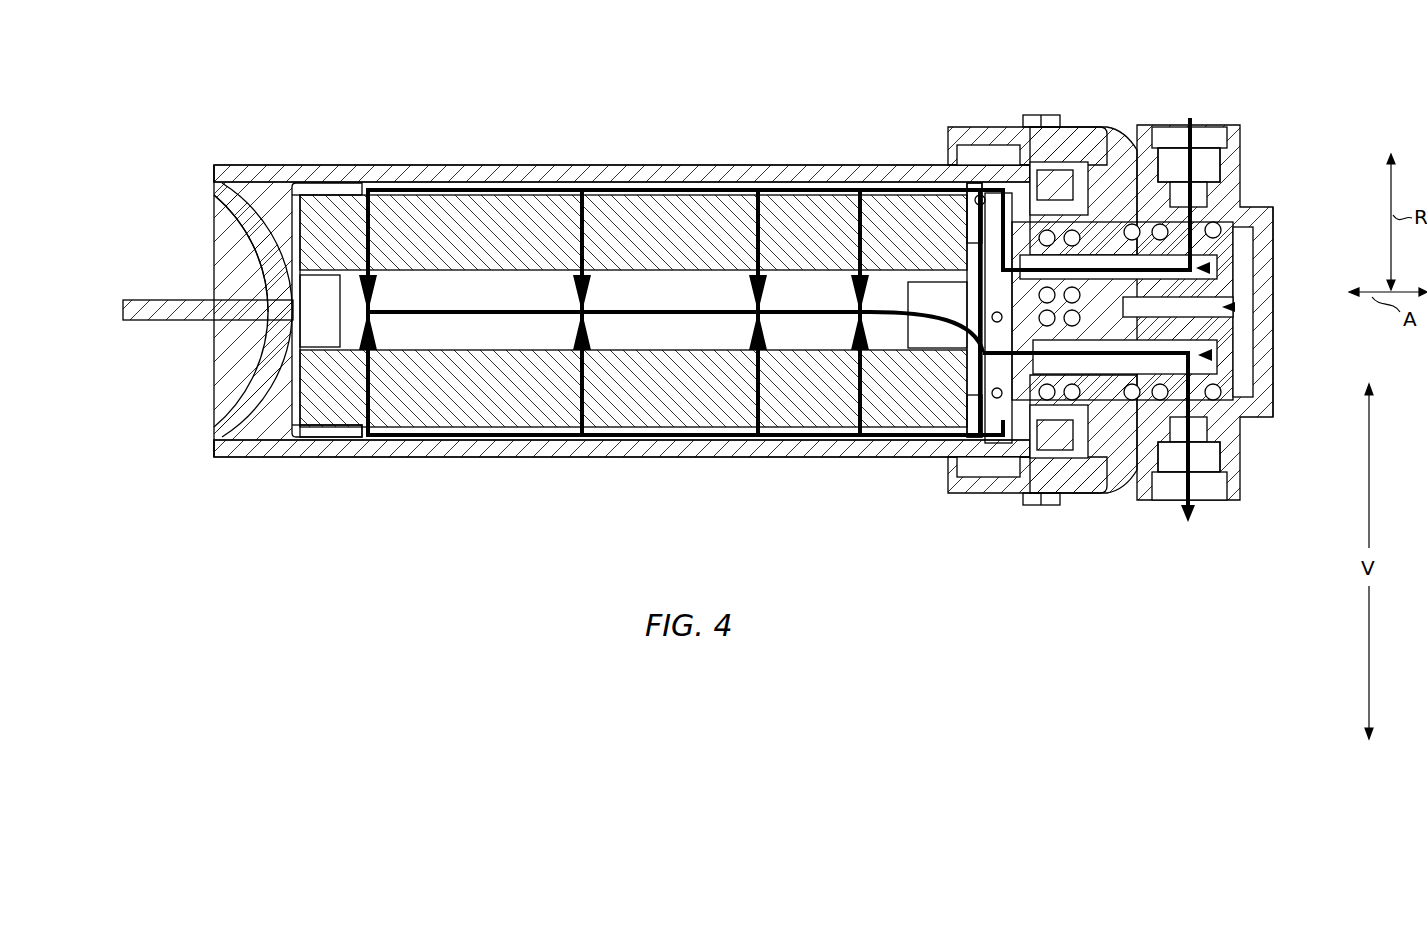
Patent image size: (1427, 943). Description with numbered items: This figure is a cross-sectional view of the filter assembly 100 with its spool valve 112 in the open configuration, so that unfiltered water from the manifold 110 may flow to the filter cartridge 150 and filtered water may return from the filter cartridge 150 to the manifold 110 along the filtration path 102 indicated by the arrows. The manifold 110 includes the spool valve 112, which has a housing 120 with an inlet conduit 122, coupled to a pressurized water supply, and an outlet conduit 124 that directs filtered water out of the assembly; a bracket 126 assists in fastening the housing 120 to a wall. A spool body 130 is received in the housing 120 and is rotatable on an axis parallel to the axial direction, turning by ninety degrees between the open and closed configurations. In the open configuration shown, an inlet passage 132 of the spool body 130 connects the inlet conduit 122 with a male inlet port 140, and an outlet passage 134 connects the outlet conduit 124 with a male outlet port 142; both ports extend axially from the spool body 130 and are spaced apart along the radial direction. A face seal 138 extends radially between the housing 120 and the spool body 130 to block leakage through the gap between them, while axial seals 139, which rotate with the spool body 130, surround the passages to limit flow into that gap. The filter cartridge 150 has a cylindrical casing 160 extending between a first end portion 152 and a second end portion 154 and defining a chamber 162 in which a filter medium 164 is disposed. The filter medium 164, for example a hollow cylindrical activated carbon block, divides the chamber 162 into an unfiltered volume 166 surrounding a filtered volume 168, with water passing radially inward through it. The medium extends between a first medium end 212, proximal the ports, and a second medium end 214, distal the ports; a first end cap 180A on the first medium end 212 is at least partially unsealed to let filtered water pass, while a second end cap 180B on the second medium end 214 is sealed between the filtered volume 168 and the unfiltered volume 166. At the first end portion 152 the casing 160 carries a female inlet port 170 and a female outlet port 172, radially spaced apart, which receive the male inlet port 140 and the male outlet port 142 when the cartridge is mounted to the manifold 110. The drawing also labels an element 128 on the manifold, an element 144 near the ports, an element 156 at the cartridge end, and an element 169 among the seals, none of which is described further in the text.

The filter assembly 100 is at (1232, 602).
The filtration path 102 is at (797, 187).
The manifold 110 is at (1240, 430).
The spool valve 112 is at (1255, 305).
The housing 120 is at (1262, 210).
The inlet conduit 122 is at (1200, 128).
The outlet conduit 124 is at (1212, 495).
The bracket 126 is at (983, 490).
The fastener nubs 128 is at (1048, 180).
The spool body 130 is at (1225, 370).
The inlet passage 132 is at (1262, 268).
The outlet passage 134 is at (1240, 380).
The face seal 138 is at (1212, 200).
The axial seals 139 is at (1128, 405).
The male inlet port 140 is at (980, 243).
The male outlet port 142 is at (990, 373).
The O-ring seals 144 is at (1085, 232).
The filter cartridge 150 is at (548, 165).
The first end portion 152 is at (975, 156).
The second end portion 154 is at (306, 160).
The rod 156 is at (152, 318).
The casing 160 is at (665, 455).
The chamber 162 is at (808, 444).
The filter medium 164 is at (480, 223).
The unfiltered volume 166 is at (655, 187).
The filtered volume 168 is at (402, 322).
The seal rings 169 is at (1050, 440).
The female inlet port 170 is at (1062, 215).
The female outlet port 172 is at (1032, 440).
The first end cap 180A is at (983, 425).
The second end cap 180B is at (292, 418).
The first medium end 212 is at (978, 445).
The second medium end 214 is at (250, 191).